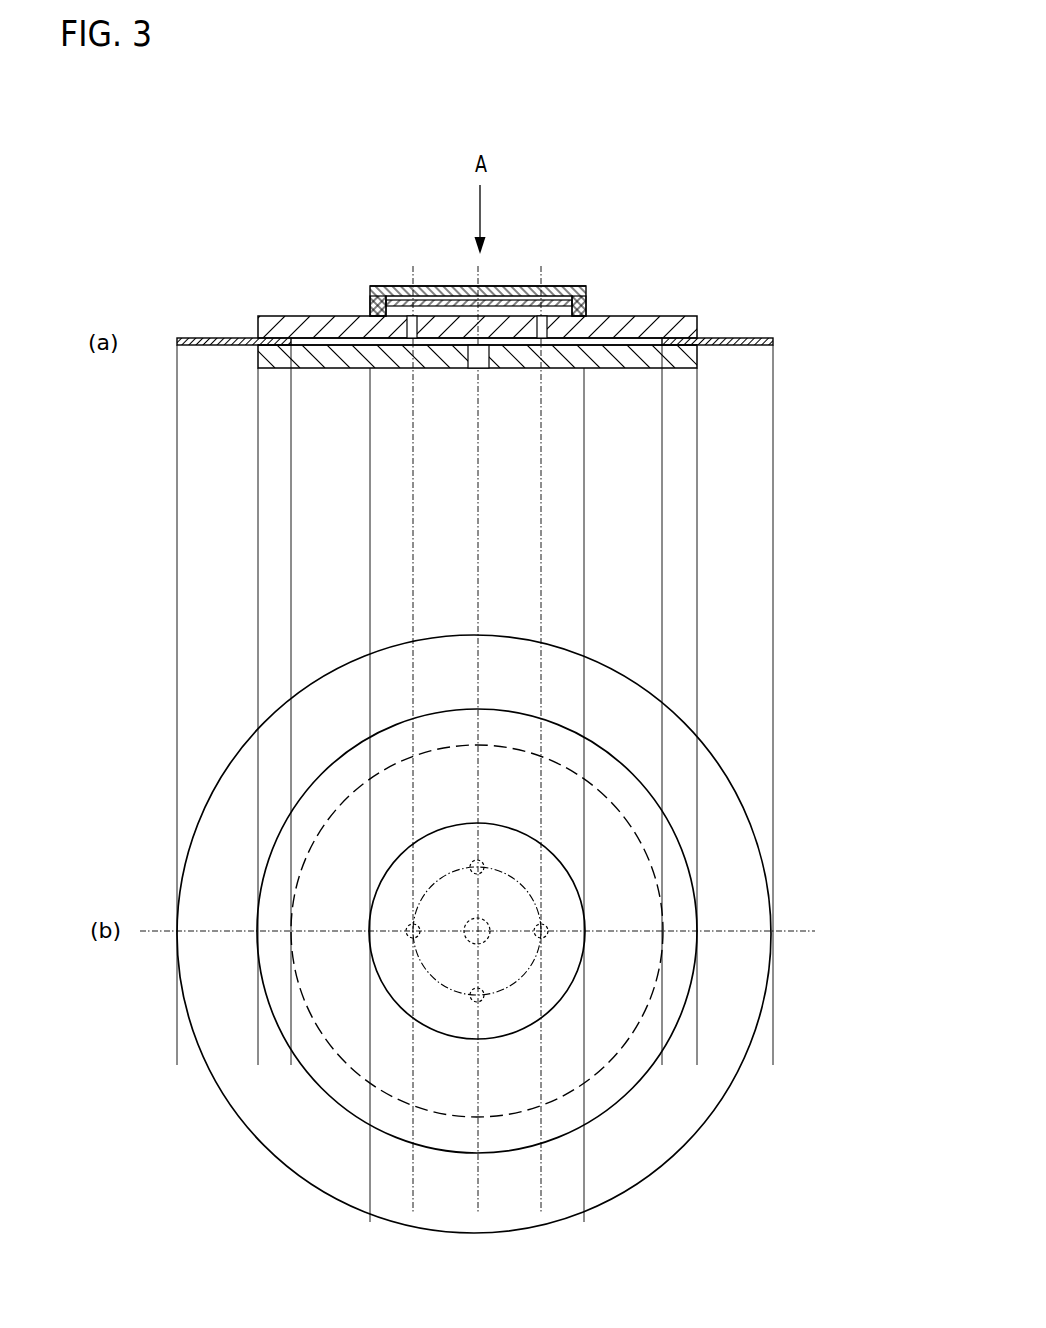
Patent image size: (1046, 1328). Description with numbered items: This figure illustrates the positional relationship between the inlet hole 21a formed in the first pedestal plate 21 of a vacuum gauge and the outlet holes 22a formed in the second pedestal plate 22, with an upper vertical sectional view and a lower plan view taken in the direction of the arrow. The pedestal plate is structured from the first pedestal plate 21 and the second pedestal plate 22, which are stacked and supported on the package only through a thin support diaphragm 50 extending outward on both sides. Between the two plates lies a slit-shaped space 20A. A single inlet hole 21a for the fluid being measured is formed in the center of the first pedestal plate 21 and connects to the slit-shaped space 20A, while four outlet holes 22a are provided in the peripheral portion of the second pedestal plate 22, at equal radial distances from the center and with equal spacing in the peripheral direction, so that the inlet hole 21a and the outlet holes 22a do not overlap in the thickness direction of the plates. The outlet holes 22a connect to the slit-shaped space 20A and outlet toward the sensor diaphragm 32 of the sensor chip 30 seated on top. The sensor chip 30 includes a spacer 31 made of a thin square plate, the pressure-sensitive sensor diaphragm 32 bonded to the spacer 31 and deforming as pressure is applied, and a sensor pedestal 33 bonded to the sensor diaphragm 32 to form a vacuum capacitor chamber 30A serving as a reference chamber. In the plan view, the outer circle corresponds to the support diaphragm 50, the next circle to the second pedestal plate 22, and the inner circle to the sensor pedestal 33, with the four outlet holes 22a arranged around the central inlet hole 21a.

The slit-shaped space 20A is at (611, 347).
The first pedestal plate 21 is at (312, 368).
The inlet hole 21a is at (468, 360).
The second pedestal plate 22 is at (292, 317).
The outlet holes 22a is at (420, 330).
The sensor chip 30 is at (595, 270).
The vacuum capacitor chamber 30A is at (517, 286).
The spacer 31 is at (375, 305).
The sensor diaphragm 32 is at (368, 302).
The sensor pedestal 33 is at (379, 288).
The support diaphragm 50 is at (745, 339).